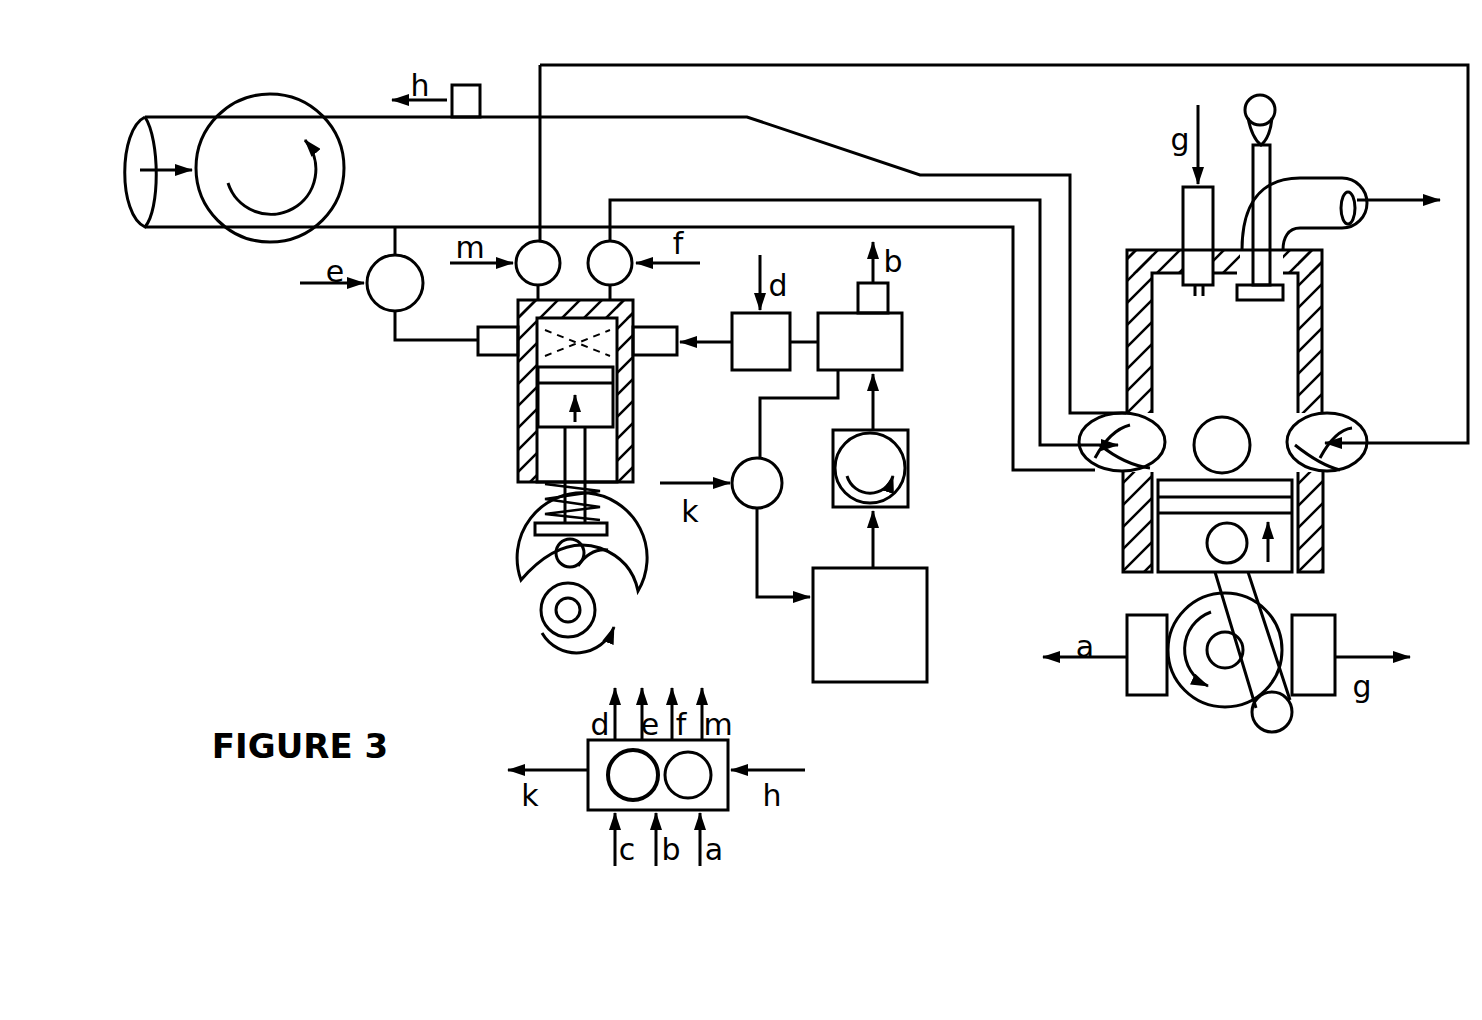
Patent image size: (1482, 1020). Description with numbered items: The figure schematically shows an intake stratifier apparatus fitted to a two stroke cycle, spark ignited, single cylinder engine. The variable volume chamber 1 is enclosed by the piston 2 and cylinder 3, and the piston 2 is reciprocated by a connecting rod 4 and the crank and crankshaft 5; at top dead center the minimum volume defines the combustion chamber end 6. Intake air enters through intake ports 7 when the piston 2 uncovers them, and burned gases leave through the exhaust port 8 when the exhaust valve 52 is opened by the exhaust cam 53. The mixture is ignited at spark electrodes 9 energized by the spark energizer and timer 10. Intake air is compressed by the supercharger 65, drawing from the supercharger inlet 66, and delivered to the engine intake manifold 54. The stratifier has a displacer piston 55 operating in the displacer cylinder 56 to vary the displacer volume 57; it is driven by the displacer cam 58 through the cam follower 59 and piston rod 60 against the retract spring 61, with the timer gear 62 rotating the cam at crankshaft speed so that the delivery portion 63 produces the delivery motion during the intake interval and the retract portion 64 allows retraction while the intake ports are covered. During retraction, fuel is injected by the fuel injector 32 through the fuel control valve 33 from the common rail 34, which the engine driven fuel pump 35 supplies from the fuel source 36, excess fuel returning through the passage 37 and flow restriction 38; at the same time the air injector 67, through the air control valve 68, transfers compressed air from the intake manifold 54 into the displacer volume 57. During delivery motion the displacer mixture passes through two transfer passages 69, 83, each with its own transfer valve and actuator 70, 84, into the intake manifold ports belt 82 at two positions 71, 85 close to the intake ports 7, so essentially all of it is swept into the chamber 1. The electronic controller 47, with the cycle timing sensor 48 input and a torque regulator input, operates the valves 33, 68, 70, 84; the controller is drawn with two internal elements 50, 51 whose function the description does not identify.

The variable volume chamber 1 is at (1268, 350).
The piston 2 is at (1265, 560).
The cylinder 3 is at (1312, 352).
The connecting rod 4 is at (1255, 615).
The crank and crankshaft 5 is at (1225, 655).
The combustion chamber end 6 is at (1292, 313).
The intake ports 7 is at (1322, 458).
The exhaust port 8 is at (1320, 188).
The spark electrodes 9 is at (1190, 215).
The spark energizer and timer 10 is at (1315, 640).
The fuel injector 32 is at (648, 345).
The fuel control valve 33 is at (770, 325).
The common rail 34 is at (870, 340).
The engine driven fuel pump 35 is at (885, 472).
The fuel source 36 is at (898, 590).
The passage 37 is at (757, 585).
The flow restriction 38 is at (740, 468).
The electronic controller 47 is at (600, 797).
The cycle timing sensor 48 is at (1145, 632).
The separator rotor 50 is at (625, 767).
The separator rotor 51 is at (695, 765).
The exhaust valve 52 is at (1262, 178).
The exhaust cam 53 is at (1268, 108).
The engine intake manifold 54 is at (840, 170).
The displacer piston 55 is at (556, 395).
The displacer cylinder 56 is at (520, 362).
The displacer volume 57 is at (617, 322).
The displacer cam 58 is at (537, 655).
The cam follower 59 is at (560, 556).
The piston rod 60 is at (572, 445).
The retract spring 61 is at (540, 510).
The timer gear 62 is at (560, 612).
The delivery portion 63 is at (603, 572).
The retract portion 64 is at (555, 608).
The supercharger 65 is at (265, 182).
The supercharger inlet 66 is at (166, 172).
The air injector 67 is at (493, 340).
The air control valve 68 is at (372, 300).
The displacer mixture transfer passage 69 is at (720, 198).
The displacer mixture transfer valve and actuator 70 is at (625, 272).
The entry position 71 is at (1112, 445).
The intake manifold ports belt 82 is at (1322, 425).
The displacer mixture transfer passage 83 is at (1468, 332).
The displacer mixture transfer valve and actuator 84 is at (520, 270).
The entry position 85 is at (1335, 462).